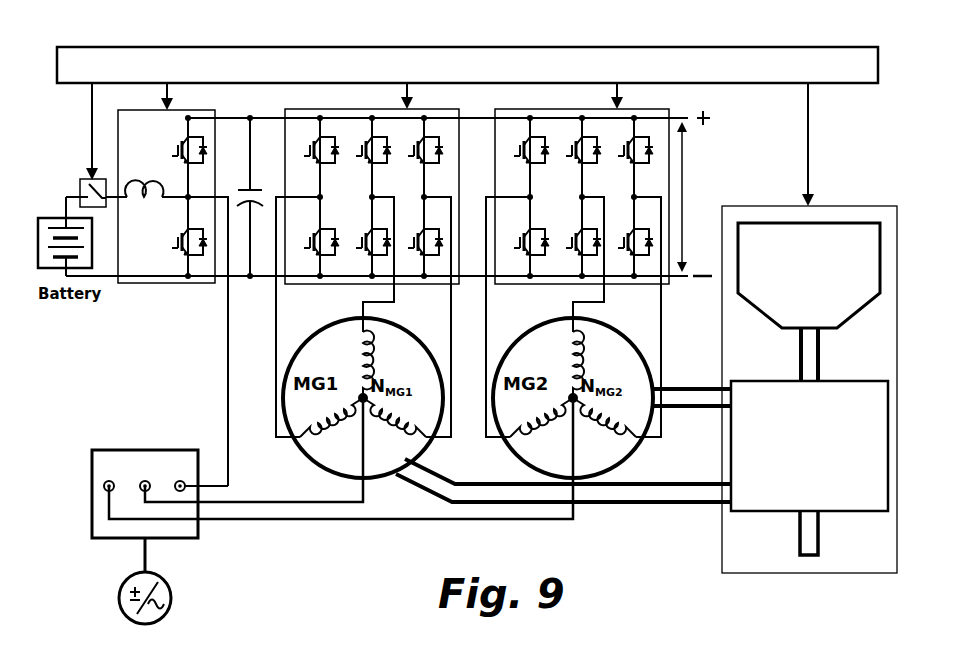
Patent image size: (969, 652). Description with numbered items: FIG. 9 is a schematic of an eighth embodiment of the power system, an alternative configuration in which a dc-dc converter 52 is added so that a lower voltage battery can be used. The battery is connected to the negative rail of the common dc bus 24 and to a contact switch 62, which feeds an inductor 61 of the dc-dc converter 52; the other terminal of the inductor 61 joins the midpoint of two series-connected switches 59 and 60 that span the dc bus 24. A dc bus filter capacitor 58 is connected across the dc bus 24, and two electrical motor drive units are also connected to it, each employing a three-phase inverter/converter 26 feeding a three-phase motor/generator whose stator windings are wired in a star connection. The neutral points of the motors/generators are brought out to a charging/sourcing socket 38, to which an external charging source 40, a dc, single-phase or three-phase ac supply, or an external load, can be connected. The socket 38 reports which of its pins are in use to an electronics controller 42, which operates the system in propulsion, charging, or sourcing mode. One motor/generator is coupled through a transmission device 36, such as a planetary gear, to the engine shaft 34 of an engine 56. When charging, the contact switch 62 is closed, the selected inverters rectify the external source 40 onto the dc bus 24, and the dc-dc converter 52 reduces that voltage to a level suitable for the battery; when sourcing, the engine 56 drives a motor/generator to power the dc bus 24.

The common dc bus 24 is at (680, 202).
The inverter/converter 26 is at (417, 108).
The engine shaft 34 is at (797, 352).
The transmission device 36 is at (757, 513).
The charging/sourcing socket 38 is at (139, 449).
The external charging source 40 is at (170, 593).
The electronics controller 42 is at (817, 65).
The dc-dc converter 52 is at (179, 252).
The engine 56 is at (811, 235).
The dc bus filter capacitor 58 is at (258, 205).
The switch 59 is at (192, 136).
The switch 60 is at (180, 258).
The inductor 61 is at (143, 203).
The contact switch 62 is at (90, 172).